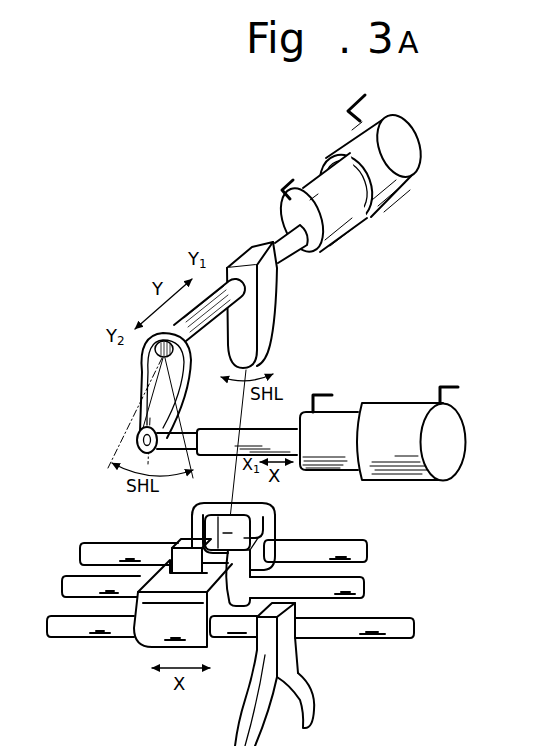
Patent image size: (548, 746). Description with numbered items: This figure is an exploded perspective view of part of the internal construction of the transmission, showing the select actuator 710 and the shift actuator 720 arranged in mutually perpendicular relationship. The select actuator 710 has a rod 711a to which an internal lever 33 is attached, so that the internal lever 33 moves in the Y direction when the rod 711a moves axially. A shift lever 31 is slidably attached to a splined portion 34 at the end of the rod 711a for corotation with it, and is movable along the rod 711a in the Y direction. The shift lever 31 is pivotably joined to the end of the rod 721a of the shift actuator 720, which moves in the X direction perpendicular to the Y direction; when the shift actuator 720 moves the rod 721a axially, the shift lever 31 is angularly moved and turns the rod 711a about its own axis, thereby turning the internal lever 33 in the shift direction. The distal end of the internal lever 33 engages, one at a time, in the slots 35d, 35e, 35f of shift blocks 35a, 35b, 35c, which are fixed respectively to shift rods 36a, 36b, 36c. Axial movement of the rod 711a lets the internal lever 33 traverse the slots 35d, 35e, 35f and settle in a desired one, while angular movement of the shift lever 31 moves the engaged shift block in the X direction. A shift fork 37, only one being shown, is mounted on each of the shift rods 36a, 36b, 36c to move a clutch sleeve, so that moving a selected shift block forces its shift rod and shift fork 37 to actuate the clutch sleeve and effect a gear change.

The select actuator 710 is at (418, 162).
The rod 711a is at (284, 240).
The internal lever 33 is at (273, 276).
The splined portion 34 is at (197, 312).
The shift lever 31 is at (142, 372).
The rod 721a is at (275, 435).
The shift actuator 720 is at (398, 472).
The shift block 35a is at (270, 522).
The shift block 35b is at (282, 572).
The shift block 35c is at (147, 643).
The slot 35d is at (213, 525).
The slot 35e is at (194, 552).
The slot 35f is at (150, 570).
The shift rod 36a is at (353, 545).
The shift rod 36b is at (360, 588).
The shift rod 36c is at (413, 640).
The shift fork 37 is at (308, 690).